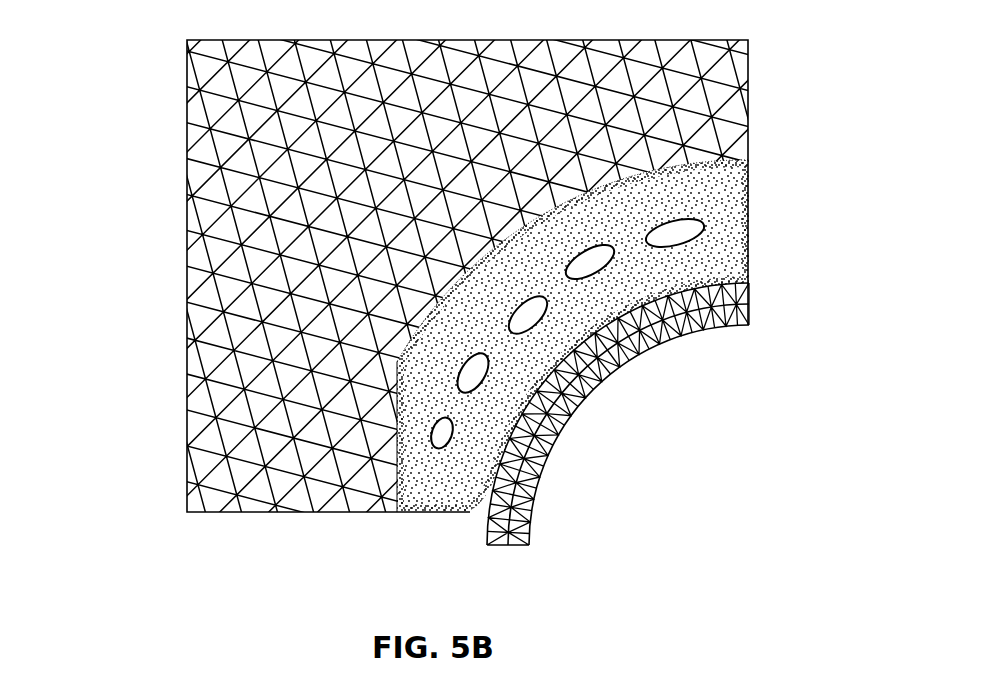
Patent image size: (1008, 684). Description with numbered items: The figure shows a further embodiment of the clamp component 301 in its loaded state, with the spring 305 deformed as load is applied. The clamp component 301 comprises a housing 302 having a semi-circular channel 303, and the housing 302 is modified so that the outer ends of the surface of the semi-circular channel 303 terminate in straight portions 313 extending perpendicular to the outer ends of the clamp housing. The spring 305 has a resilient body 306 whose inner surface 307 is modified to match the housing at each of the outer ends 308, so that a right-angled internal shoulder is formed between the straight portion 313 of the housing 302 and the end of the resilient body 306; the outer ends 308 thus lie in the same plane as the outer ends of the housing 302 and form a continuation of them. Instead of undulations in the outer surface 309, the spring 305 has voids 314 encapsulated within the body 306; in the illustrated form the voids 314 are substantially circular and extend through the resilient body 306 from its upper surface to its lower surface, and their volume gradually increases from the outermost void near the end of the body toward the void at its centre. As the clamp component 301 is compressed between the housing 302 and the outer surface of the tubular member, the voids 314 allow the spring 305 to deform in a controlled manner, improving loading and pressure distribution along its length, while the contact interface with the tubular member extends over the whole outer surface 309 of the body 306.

The clamp component 301 is at (111, 137).
The housing 302 is at (701, 78).
The semi-circular channel 303 is at (742, 129).
The spring 305 is at (768, 250).
The resilient body 306 is at (752, 204).
The inner surface 307 is at (423, 516).
The outer ends 308 is at (455, 516).
The outer surface 309 is at (618, 325).
The straight portions 313 is at (384, 470).
The voids 314 is at (678, 233).